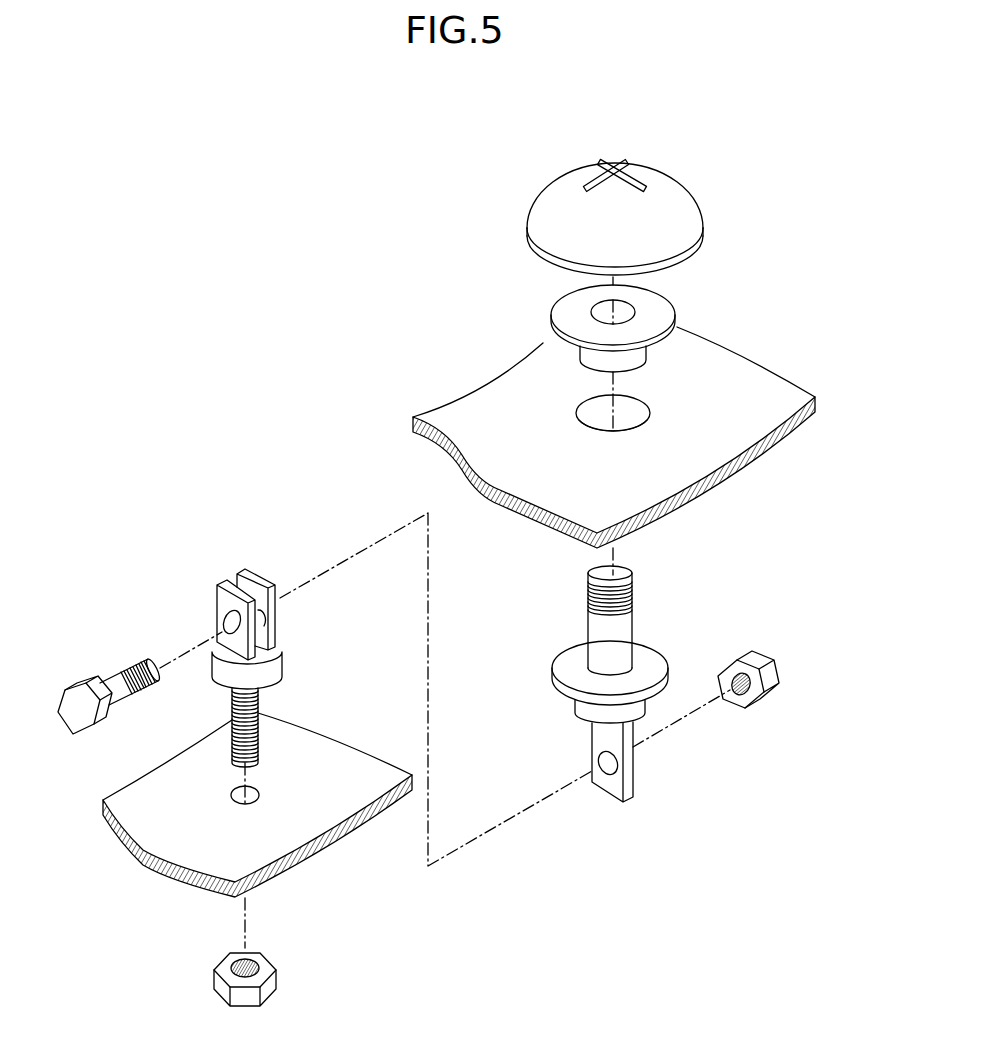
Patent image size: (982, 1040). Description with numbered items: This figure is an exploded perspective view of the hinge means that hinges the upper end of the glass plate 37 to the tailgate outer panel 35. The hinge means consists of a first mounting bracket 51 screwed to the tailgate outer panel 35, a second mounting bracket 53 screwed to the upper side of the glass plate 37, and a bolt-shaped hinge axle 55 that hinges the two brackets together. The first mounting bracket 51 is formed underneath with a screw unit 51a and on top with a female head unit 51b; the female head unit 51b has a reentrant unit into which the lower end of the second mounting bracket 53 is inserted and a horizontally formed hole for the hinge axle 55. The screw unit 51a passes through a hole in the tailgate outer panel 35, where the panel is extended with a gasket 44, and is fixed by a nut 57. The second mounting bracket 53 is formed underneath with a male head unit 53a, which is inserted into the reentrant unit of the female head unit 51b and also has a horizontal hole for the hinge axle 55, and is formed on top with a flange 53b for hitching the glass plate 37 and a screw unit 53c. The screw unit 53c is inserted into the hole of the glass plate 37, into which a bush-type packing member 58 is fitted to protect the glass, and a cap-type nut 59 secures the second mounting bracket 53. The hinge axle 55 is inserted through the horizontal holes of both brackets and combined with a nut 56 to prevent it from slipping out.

The tailgate outer panel 35 is at (257, 820).
The glass plate 37 is at (487, 407).
The gasket 44 is at (328, 847).
The first mounting bracket 51 is at (298, 633).
The screw unit 51a is at (260, 722).
The female head unit 51b is at (253, 572).
The second mounting bracket 53 is at (600, 691).
The male head unit 53a is at (630, 767).
The flange 53b is at (655, 660).
The screw unit 53c is at (590, 603).
The hinge axle 55 is at (112, 687).
The nut 56 is at (770, 672).
The nut 57 is at (273, 987).
The bush-type packing member 58 is at (680, 325).
The cap-type nut 59 is at (555, 208).